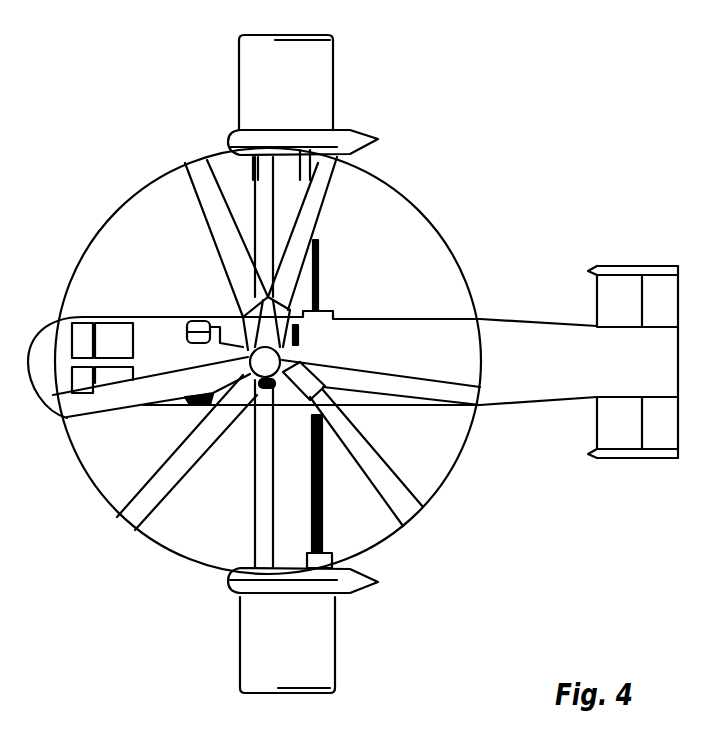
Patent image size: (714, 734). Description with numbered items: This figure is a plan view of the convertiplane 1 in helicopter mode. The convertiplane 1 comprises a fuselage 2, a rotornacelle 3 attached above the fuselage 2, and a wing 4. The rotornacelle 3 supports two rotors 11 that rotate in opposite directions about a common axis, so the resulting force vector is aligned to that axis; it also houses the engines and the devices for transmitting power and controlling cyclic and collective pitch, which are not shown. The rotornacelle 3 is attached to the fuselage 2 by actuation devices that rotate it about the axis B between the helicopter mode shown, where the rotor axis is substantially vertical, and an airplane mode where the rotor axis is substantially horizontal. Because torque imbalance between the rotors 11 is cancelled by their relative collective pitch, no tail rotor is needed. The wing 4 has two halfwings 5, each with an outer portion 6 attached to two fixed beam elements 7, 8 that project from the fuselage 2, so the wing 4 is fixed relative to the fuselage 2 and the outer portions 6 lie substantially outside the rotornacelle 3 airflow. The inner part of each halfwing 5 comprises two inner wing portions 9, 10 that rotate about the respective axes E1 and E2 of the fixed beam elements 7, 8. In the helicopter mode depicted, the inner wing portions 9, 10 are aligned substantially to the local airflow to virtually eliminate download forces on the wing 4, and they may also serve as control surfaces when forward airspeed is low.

The convertiplane 1 is at (499, 135).
The fuselage 2 is at (525, 365).
The rotornacelle 3 is at (250, 348).
The wing 4 is at (212, 72).
The halfwing 5 is at (335, 617).
The outer portion 6 is at (308, 647).
The fixed beam element 7 is at (312, 522).
The fixed beam element 8 is at (312, 492).
The inner wing portion 9 is at (253, 510).
The inner wing portion 10 is at (253, 488).
The rotor 11 is at (123, 198).
The axis B is at (199, 320).
The axis E1 is at (316, 240).
The axis E2 is at (265, 300).